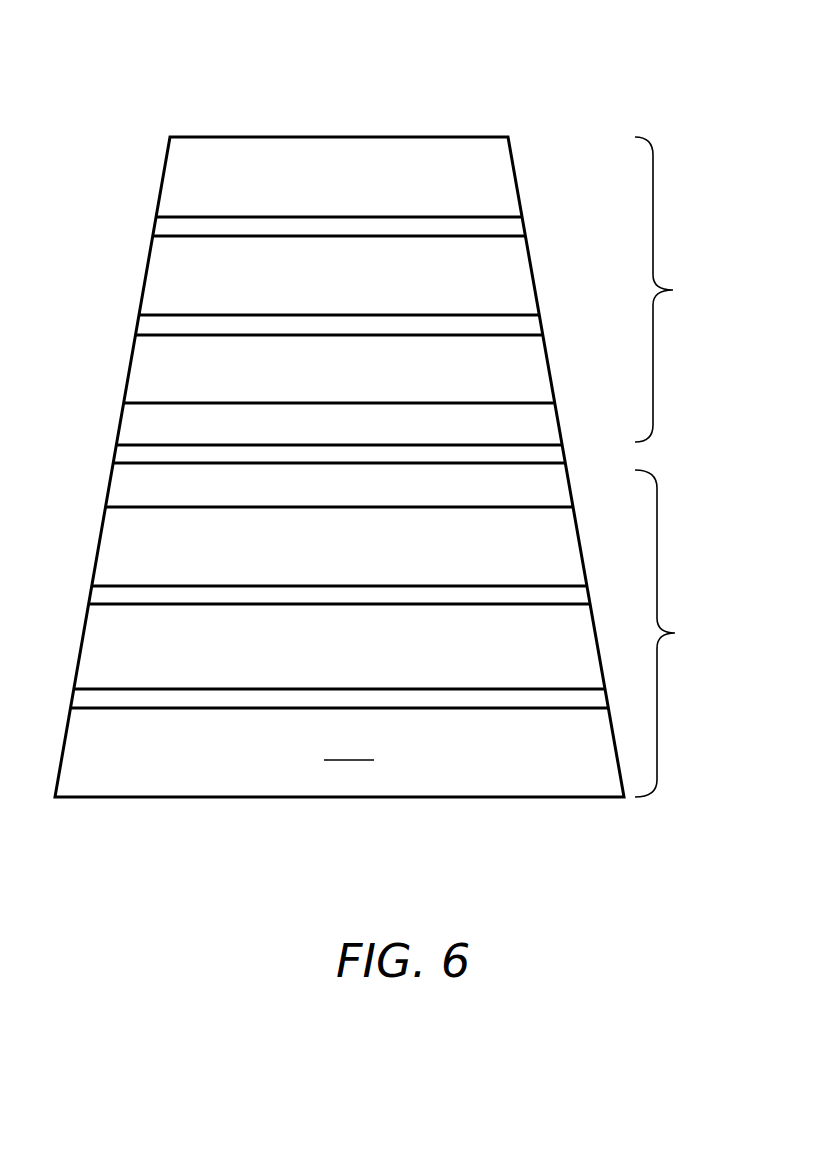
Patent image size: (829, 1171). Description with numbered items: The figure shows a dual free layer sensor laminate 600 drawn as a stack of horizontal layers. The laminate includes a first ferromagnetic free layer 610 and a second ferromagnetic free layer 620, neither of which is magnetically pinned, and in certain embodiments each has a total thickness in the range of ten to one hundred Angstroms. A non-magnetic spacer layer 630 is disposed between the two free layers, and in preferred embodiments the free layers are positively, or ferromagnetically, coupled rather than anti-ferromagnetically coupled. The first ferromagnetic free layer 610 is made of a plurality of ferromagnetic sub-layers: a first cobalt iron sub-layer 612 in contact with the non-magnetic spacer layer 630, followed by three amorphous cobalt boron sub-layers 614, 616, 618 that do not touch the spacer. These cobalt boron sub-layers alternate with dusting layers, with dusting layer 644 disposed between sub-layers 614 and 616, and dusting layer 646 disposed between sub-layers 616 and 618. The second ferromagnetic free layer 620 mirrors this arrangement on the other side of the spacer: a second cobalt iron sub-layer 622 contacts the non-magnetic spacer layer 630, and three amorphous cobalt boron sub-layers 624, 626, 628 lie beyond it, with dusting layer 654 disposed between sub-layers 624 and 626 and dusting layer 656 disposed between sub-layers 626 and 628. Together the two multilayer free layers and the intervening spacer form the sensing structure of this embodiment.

The dual free layer sensor laminate 600 is at (158, 74).
The first ferromagnetic free layer 610 is at (684, 633).
The second ferromagnetic free layer 620 is at (684, 289).
The first cobalt iron sub-layer 612 is at (374, 499).
The amorphous cobalt boron sub-layer 614 is at (374, 561).
The amorphous cobalt boron sub-layer 616 is at (374, 662).
The amorphous cobalt boron sub-layer 618 is at (349, 748).
The second cobalt iron sub-layer 622 is at (374, 437).
The amorphous cobalt boron sub-layer 624 is at (374, 379).
The amorphous cobalt boron sub-layer 626 is at (374, 287).
The amorphous cobalt boron sub-layer 628 is at (374, 192).
The non-magnetic spacer layer 630 is at (128, 455).
The dusting layer 644 is at (415, 597).
The dusting layer 646 is at (415, 697).
The dusting layer 654 is at (152, 326).
The dusting layer 656 is at (170, 226).